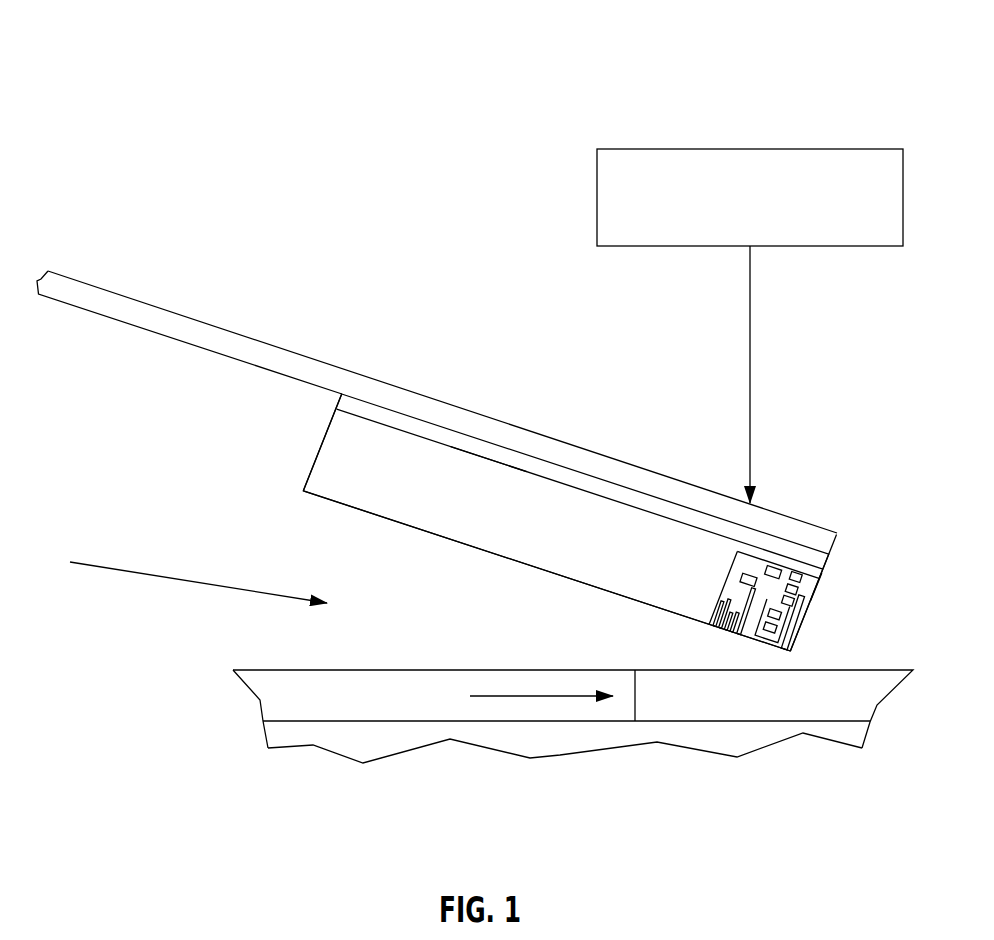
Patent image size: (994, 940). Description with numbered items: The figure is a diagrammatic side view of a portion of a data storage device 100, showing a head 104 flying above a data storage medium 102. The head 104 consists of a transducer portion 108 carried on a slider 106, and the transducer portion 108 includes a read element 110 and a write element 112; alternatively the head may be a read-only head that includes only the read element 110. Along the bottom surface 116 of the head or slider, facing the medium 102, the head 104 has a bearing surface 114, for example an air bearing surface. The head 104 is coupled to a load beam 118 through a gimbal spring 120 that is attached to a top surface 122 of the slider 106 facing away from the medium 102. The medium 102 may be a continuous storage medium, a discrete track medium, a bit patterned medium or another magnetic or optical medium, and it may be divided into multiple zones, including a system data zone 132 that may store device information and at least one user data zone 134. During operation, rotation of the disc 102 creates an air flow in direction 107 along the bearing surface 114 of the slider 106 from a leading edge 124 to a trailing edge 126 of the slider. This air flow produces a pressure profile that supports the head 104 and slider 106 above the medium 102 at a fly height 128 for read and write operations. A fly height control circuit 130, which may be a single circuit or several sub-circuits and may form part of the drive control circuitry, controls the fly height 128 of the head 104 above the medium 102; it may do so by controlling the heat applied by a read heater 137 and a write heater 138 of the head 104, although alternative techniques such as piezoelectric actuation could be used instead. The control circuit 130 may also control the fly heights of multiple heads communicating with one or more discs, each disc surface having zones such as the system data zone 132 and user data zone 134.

The data storage device 100 is at (117, 52).
The data storage medium 102 is at (840, 707).
The head 104 is at (831, 526).
The slider 106 is at (557, 525).
The air flow direction 107 is at (528, 696).
The transducer portion 108 is at (832, 574).
The read element 110 is at (753, 548).
The write element 112 is at (806, 558).
The bearing surface 114 is at (483, 557).
The bottom surface 116 is at (598, 588).
The load beam 118 is at (268, 352).
The gimbal spring 120 is at (497, 452).
The top surface 122 is at (630, 502).
The leading edge 124 is at (313, 458).
The trailing edge 126 is at (824, 584).
The fly height 128 is at (782, 658).
The fly height control circuit 130 is at (597, 197).
The system data zone 132 is at (687, 705).
The user data zone 134 is at (330, 705).
The read heater 137 is at (737, 573).
The write heater 138 is at (743, 565).